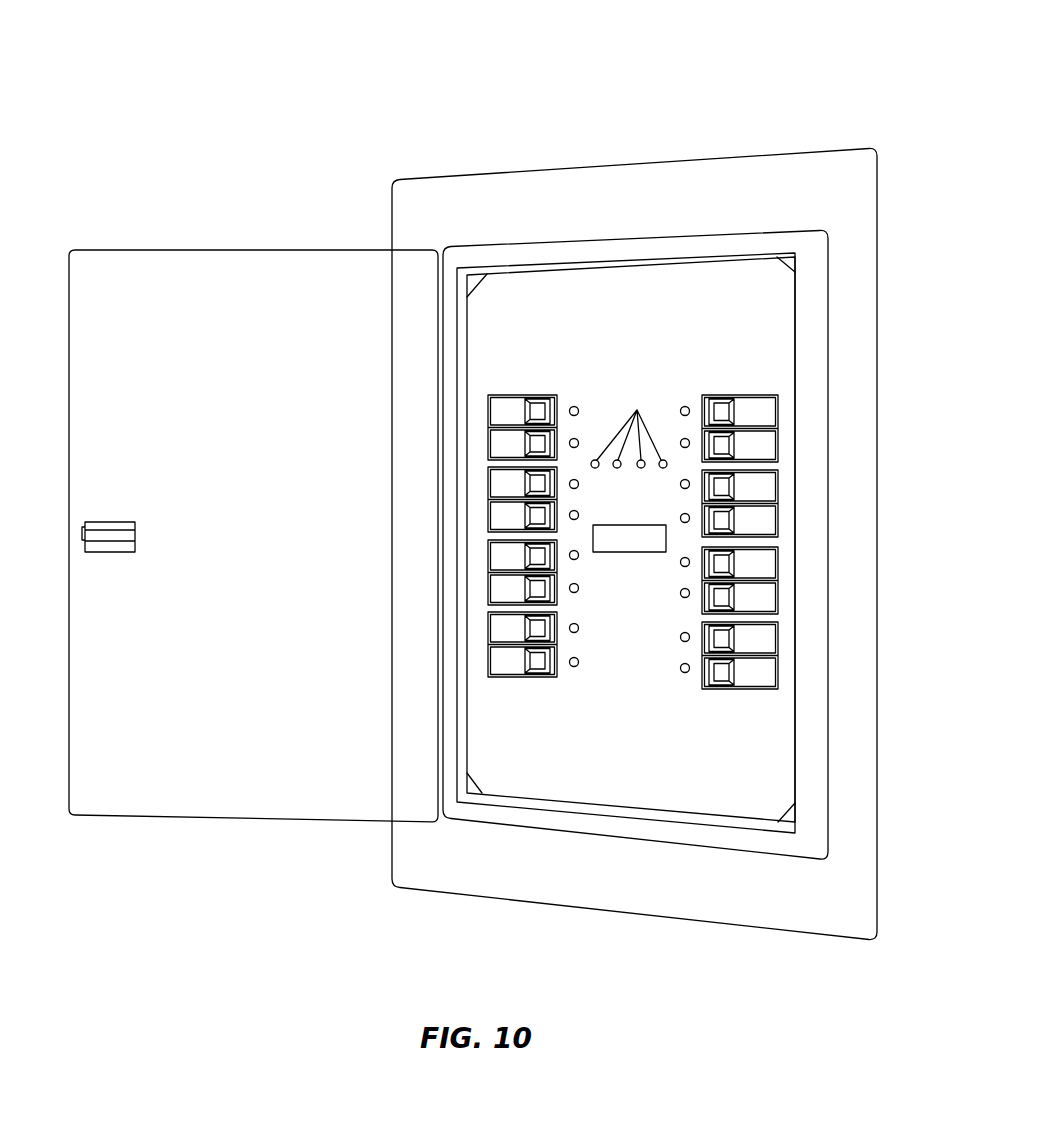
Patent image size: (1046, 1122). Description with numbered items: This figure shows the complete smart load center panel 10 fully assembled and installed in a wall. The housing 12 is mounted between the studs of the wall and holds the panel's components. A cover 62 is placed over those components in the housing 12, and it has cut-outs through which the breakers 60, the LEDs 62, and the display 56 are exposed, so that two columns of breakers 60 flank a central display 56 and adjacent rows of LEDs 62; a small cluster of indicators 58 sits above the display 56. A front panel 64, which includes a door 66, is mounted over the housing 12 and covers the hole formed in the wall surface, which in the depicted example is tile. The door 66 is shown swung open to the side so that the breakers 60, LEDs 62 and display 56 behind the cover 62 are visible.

The smart load center panel 10 is at (716, 92).
The housing 12 is at (553, 253).
The display 56 is at (638, 553).
The indicator lights 58 is at (629, 426).
The breakers 60 is at (767, 448).
The cover 62 is at (648, 312).
The front panel 64 is at (478, 197).
The door 66 is at (263, 283).